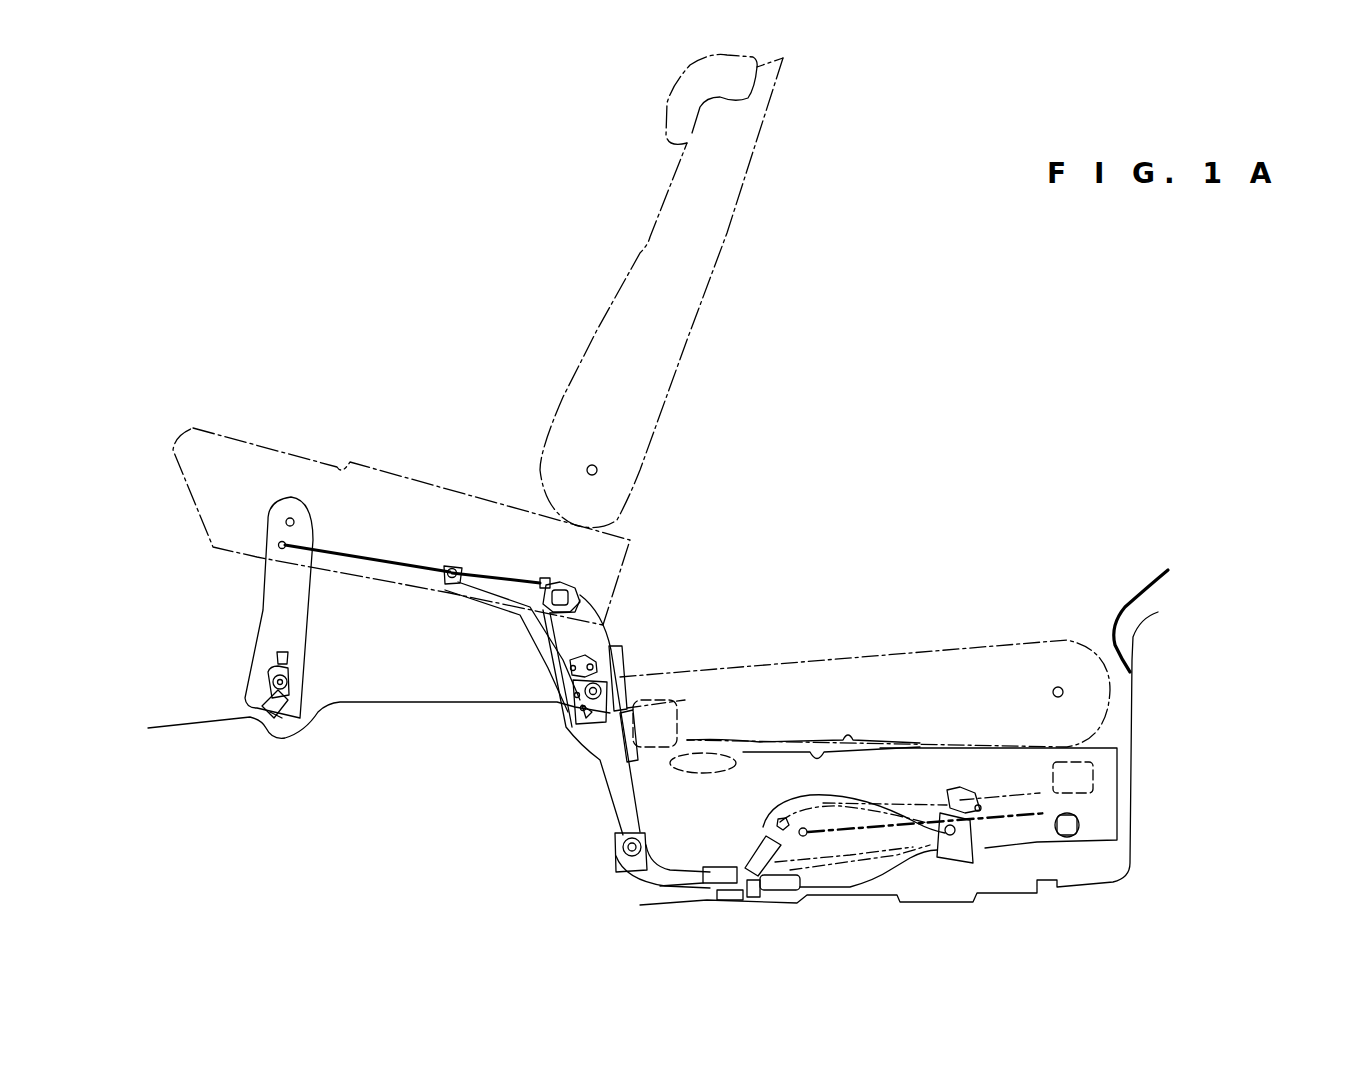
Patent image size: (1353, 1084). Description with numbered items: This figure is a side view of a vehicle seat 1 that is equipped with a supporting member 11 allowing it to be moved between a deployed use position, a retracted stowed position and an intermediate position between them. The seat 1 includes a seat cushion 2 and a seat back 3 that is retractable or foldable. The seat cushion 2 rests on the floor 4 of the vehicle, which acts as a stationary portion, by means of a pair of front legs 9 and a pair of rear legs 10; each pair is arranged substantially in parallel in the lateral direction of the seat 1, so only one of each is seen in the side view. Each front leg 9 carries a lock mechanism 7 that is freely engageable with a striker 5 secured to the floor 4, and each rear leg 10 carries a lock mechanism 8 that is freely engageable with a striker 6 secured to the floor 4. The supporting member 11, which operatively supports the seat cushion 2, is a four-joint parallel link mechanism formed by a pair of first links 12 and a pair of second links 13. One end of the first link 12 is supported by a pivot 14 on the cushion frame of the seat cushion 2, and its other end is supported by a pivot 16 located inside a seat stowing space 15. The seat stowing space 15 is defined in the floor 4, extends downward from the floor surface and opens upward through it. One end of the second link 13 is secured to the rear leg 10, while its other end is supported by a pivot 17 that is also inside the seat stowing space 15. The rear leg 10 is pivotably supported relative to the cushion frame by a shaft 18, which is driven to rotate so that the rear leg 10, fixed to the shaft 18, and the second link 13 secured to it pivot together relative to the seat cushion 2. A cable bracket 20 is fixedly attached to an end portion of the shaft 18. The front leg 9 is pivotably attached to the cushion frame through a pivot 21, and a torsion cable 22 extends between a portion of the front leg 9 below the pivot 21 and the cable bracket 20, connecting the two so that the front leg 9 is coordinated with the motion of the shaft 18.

The seat 1 is at (420, 318).
The seat cushion 2 is at (258, 426).
The seat back 3 is at (727, 238).
The floor 4 is at (192, 723).
The striker 5 is at (280, 700).
The striker 6 is at (585, 718).
The lock mechanism 7 is at (293, 686).
The lock mechanism 8 is at (556, 676).
The front leg 9 is at (308, 622).
The rear leg 10 is at (615, 630).
The supporting member 11 is at (642, 768).
The first link 12 is at (513, 612).
The second link 13 is at (670, 850).
The pivot 14 is at (452, 566).
The seat stowing space 15 is at (1168, 570).
The pivot 16 is at (622, 850).
The pivot 17 is at (743, 888).
The shaft 18 is at (579, 598).
The cable bracket 20 is at (550, 578).
The pivot 21 is at (296, 520).
The torsion cable 22 is at (418, 558).